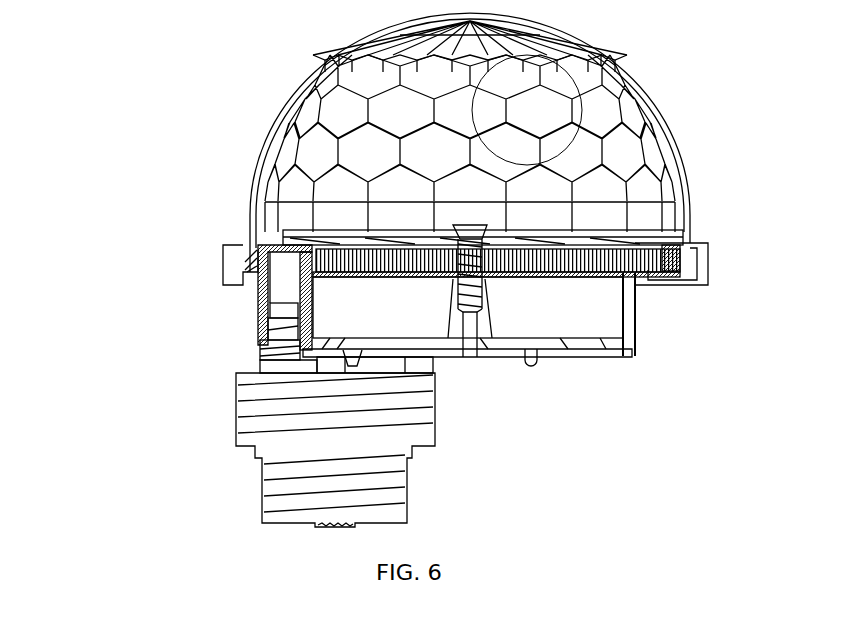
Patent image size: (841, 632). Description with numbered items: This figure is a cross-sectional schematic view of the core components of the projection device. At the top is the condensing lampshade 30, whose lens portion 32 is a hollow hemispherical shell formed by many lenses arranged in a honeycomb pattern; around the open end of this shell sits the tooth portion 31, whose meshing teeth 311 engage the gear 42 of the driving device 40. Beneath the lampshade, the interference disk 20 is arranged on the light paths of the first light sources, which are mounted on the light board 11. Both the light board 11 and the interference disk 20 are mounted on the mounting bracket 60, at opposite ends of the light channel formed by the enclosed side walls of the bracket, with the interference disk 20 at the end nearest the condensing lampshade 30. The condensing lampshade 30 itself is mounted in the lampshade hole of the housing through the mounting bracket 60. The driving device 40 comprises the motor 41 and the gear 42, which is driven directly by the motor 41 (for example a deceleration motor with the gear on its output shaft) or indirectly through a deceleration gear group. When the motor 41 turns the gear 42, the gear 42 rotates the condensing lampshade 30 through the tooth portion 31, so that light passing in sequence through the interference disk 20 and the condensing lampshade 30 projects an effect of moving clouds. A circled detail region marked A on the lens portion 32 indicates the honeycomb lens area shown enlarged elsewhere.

The condensing lampshade 30 is at (102, 102).
The lens portion 32 is at (270, 135).
The tooth portion 31 is at (247, 241).
The meshing teeth 311 is at (635, 287).
The interference disk 20 is at (617, 238).
The light board 11 is at (587, 360).
The mounting bracket 60 is at (630, 330).
The driving device 40 is at (102, 298).
The gear 42 is at (258, 298).
The motor 41 is at (262, 392).
The detail region A is at (565, 70).